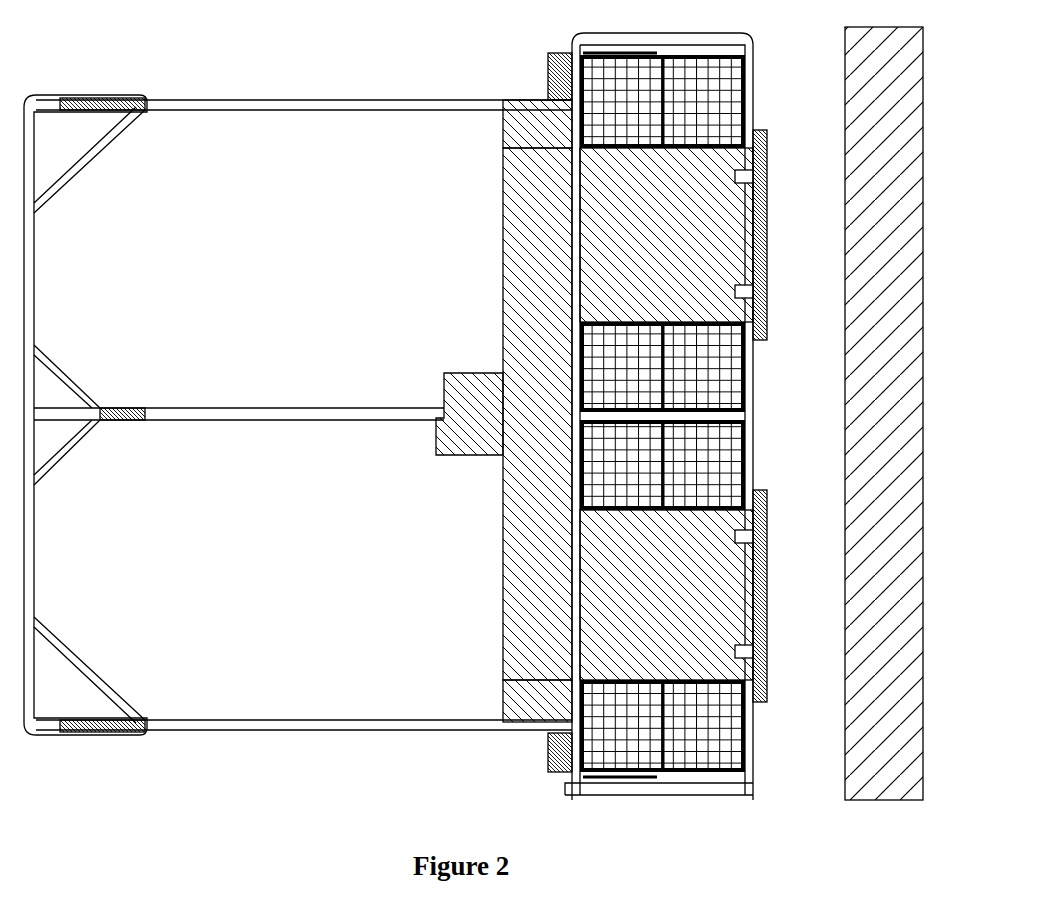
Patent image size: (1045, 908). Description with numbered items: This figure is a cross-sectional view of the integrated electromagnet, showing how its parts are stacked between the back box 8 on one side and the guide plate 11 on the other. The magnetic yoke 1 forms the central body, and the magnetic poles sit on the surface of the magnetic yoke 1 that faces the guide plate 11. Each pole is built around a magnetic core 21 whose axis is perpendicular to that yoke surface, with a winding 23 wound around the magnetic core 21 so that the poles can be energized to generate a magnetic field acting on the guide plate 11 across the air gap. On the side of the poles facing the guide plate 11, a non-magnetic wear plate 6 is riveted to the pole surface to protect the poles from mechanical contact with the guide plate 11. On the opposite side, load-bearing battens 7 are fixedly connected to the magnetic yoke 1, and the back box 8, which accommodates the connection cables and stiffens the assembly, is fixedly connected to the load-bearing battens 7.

The magnetic yoke 1 is at (510, 558).
The wear plate 6 is at (767, 209).
The load-bearing batten 7 is at (523, 120).
The back box 8 is at (345, 100).
The guide plate 11 is at (845, 485).
The magnetic core 21 is at (735, 240).
The winding 23 is at (722, 358).